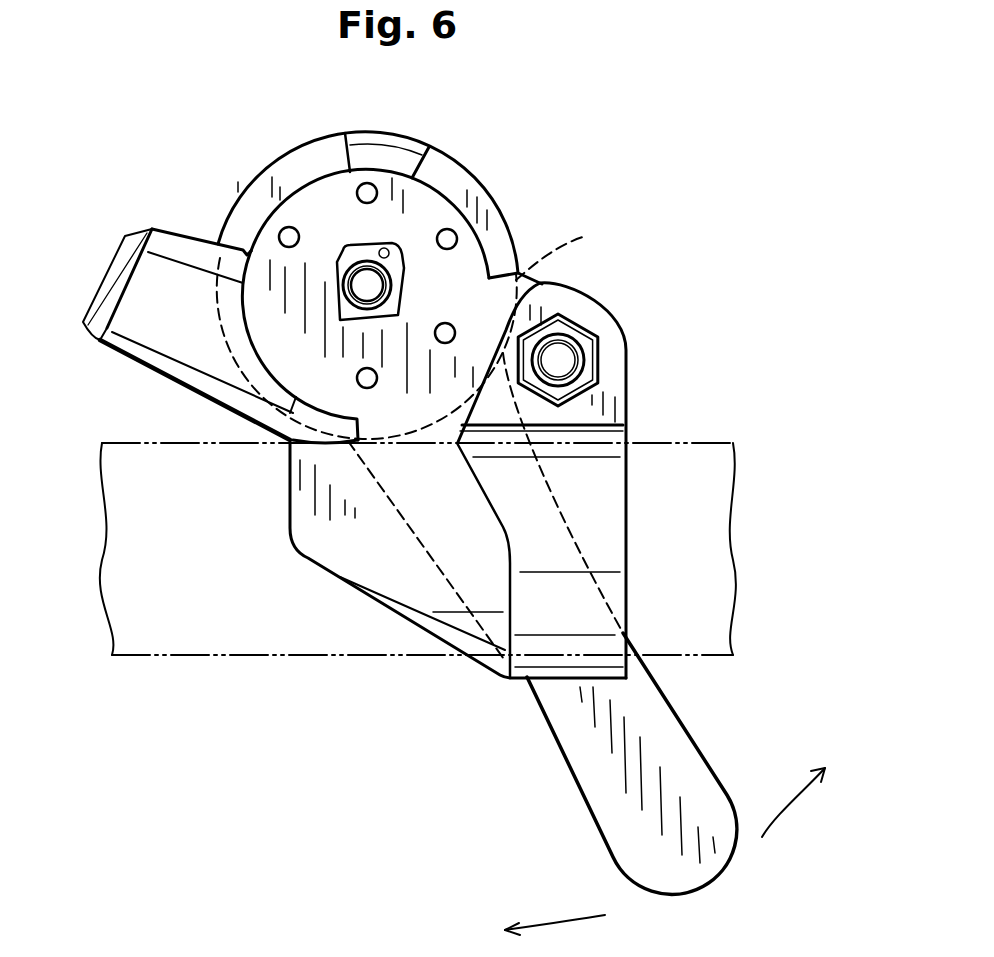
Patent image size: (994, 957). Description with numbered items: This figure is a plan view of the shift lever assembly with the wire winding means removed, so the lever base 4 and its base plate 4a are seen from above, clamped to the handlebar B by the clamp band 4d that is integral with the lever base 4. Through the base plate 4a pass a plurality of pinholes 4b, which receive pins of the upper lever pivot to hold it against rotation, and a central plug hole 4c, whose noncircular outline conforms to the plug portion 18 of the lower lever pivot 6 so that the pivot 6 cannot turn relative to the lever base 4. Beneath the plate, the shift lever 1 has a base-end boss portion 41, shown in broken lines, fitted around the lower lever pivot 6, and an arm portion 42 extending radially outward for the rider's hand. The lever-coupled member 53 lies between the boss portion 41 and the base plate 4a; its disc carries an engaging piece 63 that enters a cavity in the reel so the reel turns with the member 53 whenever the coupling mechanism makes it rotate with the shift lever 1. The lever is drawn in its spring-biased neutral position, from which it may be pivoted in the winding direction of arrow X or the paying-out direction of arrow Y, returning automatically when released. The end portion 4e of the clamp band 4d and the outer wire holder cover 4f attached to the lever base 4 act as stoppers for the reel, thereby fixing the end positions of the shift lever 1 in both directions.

The shift lever 1 is at (492, 556).
The lever base 4 is at (446, 410).
The base plate 4a is at (315, 200).
The pinholes 4b is at (281, 233).
The plug hole 4c is at (390, 252).
The clamp band 4d is at (610, 530).
The end portion of the clamp band 4e is at (587, 307).
The outer wire holder cover 4f is at (185, 237).
The lower lever pivot 6 is at (414, 197).
The plug portion 18 is at (414, 197).
The base-end boss portion 41 is at (571, 249).
The arm portion 42 is at (658, 717).
The lever-coupled member 53 is at (368, 174).
The engaging piece 63 is at (393, 158).
The handlebar B is at (252, 657).
The arrow X (wire winding direction) X is at (793, 795).
The arrow Y (wire paying-out direction) Y is at (555, 914).